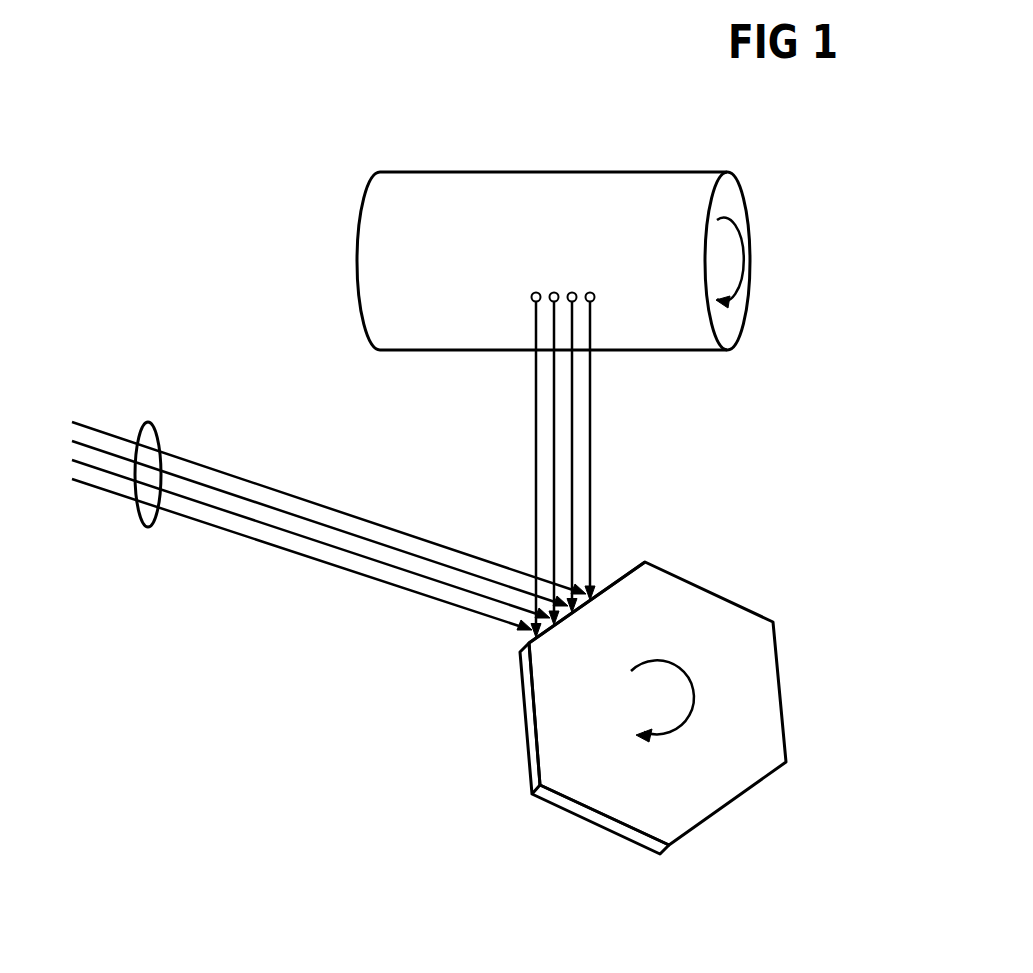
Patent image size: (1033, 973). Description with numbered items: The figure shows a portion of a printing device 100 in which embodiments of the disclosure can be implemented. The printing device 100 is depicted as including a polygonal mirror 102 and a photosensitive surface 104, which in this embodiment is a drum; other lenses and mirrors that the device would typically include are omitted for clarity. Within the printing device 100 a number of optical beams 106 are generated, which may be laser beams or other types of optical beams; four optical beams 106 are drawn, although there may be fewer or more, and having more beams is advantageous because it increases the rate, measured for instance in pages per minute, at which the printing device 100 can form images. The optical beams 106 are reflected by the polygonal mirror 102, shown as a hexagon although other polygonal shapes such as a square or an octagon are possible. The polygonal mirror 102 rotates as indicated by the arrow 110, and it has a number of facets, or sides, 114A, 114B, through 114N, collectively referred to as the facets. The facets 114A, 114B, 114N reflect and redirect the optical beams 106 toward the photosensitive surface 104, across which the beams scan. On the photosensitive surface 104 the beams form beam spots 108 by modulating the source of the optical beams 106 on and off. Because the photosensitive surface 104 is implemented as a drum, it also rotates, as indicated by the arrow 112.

The printing device 100 is at (68, 207).
The polygonal mirror 102 is at (790, 567).
The photosensitive surface 104 is at (678, 350).
The optical beams 106 is at (148, 527).
The beam spots 108 is at (608, 290).
The arrow 110 is at (693, 703).
The arrow 112 is at (742, 255).
The facet 114A is at (535, 765).
The facet 114B is at (605, 829).
The facet 114N is at (627, 574).